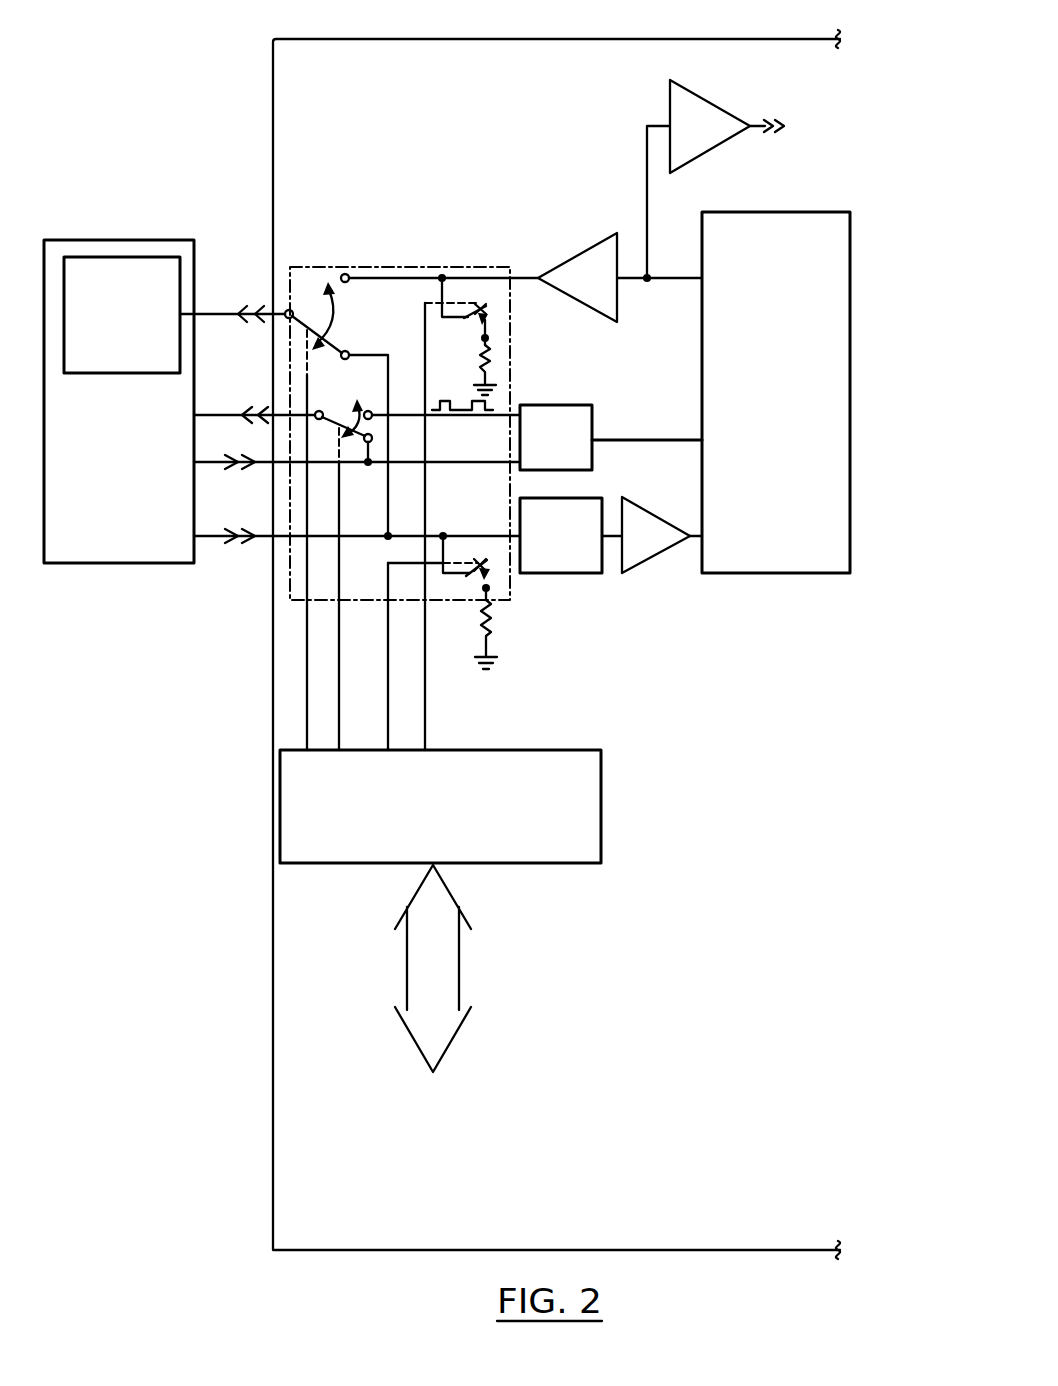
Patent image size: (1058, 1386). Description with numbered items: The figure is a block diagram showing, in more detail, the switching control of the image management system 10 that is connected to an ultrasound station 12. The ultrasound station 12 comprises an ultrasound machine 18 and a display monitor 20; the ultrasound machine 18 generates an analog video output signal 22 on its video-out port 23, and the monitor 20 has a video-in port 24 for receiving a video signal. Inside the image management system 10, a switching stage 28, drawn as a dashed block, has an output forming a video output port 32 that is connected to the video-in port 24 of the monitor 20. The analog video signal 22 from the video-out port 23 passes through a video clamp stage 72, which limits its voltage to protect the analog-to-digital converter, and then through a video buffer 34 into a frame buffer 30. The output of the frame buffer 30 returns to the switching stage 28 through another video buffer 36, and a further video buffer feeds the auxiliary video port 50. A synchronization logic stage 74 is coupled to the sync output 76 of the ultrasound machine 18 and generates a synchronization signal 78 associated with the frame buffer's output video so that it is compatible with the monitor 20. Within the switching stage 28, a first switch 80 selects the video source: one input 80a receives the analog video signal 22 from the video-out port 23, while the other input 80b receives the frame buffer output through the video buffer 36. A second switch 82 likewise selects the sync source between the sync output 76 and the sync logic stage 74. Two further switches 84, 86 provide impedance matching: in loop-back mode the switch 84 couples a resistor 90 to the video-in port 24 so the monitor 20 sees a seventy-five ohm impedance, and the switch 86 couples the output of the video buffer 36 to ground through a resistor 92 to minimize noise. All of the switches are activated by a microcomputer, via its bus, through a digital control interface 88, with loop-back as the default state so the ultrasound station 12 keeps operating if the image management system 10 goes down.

The image management system 10 is at (693, 39).
The ultrasound station 12 is at (72, 588).
The ultrasound machine 18 is at (110, 548).
The display monitor 20 is at (80, 373).
The analog video output signal 22 is at (261, 523).
The video-out port 23 is at (208, 541).
The video-in port 24 is at (210, 317).
The switching stage 28 is at (304, 267).
The frame buffer 30 is at (850, 423).
The video output port 32 is at (257, 318).
The video buffer 34 is at (646, 505).
The video buffer 36 is at (600, 240).
The auxiliary video port 50 is at (793, 111).
The video clamp stage 72 is at (591, 497).
The synchronization logic stage 74 is at (594, 416).
The sync output 76 is at (214, 459).
The synchronization signal 78 is at (443, 400).
The switch 80 is at (337, 311).
The input of switch 80a is at (378, 352).
The input of switch 80b is at (375, 277).
The switch 82 is at (329, 408).
The switch 84 is at (470, 573).
The switch 86 is at (452, 320).
The digital control interface 88 is at (601, 825).
The resistor 90 is at (482, 622).
The resistor 92 is at (490, 360).